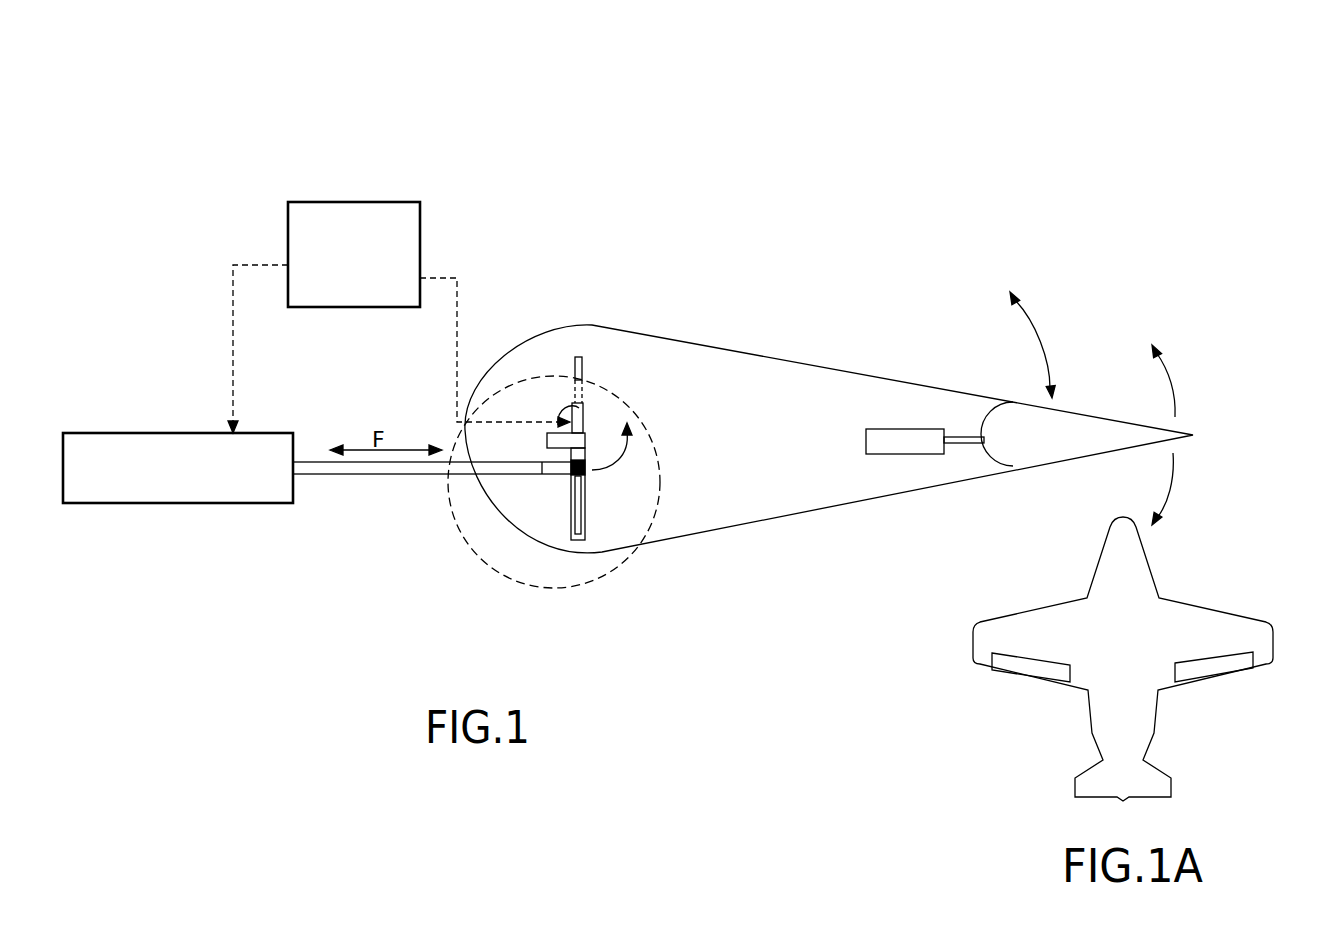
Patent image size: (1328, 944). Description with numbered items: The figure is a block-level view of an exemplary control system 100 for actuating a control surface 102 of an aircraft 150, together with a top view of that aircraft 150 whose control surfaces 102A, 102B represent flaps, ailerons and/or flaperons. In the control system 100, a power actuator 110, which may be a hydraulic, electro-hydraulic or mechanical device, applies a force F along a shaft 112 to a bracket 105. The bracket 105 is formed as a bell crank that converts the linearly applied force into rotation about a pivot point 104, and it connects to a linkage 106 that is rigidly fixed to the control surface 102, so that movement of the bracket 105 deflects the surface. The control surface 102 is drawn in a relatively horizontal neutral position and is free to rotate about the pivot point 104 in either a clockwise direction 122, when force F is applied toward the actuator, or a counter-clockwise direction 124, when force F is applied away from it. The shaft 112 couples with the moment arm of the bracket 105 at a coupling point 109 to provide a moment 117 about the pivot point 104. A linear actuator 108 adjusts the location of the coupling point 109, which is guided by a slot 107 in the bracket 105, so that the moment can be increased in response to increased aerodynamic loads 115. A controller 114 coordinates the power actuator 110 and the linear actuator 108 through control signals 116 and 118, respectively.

In FIG. 1, the control system 100 is at (840, 221).
In FIG. 1, the control surface 102 is at (786, 362).
In FIG. 1A, the control surface 102A is at (1022, 665).
In FIG. 1A, the control surface 102B is at (1237, 665).
In FIG. 1, the pivot point 104 is at (594, 467).
In FIG. 1, the bracket 105 is at (546, 444).
In FIG. 1, the linkage 106 is at (585, 362).
In FIG. 1, the slot 107 is at (587, 505).
In FIG. 1, the linear actuator 108 is at (588, 418).
In FIG. 1, the coupling point 109 is at (568, 472).
In FIG. 1, the power actuator 110 is at (137, 480).
In FIG. 1, the shaft 112 is at (347, 478).
In FIG. 1, the controller 114 is at (383, 200).
In FIG. 1, the loads 115 is at (1048, 340).
In FIG. 1, the control signal 116 is at (235, 370).
In FIG. 1, the moment 117 is at (633, 452).
In FIG. 1, the control signal 118 is at (458, 305).
In FIG. 1, the clockwise direction 122 is at (1172, 457).
In FIG. 1, the counter-clockwise direction 124 is at (1172, 398).
In FIG. 1A, the aircraft 150 is at (1176, 573).